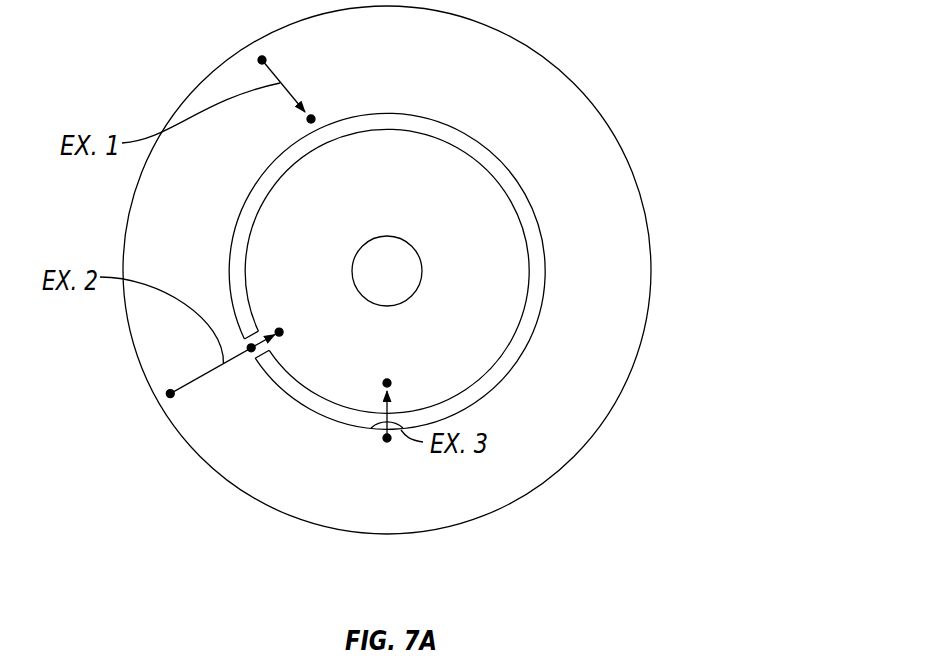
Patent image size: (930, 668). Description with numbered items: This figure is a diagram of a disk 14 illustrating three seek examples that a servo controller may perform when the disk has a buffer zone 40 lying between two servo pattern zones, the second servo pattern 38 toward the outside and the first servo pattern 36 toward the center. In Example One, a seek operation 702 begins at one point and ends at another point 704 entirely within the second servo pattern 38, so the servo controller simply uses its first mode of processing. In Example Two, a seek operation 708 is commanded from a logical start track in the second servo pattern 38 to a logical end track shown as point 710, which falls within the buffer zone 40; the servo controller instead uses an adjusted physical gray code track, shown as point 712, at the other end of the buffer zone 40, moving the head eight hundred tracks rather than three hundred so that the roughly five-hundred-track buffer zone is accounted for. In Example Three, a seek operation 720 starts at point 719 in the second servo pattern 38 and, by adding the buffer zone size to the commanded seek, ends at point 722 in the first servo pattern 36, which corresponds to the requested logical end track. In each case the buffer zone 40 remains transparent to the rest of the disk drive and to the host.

The disc / wafer body 14 is at (570, 58).
The second servo pattern 38 is at (623, 180).
The buffer zone 40 is at (542, 264).
The first servo pattern 36 is at (509, 315).
The seek operation 702 is at (267, 63).
The second reference point on ring (Example 1) 704 is at (312, 118).
The seek operation 708 is at (200, 377).
The point 710 is at (254, 328).
The point 712 is at (281, 336).
The point 719 is at (386, 441).
The seek operation 720 is at (370, 429).
The point 722 is at (387, 379).